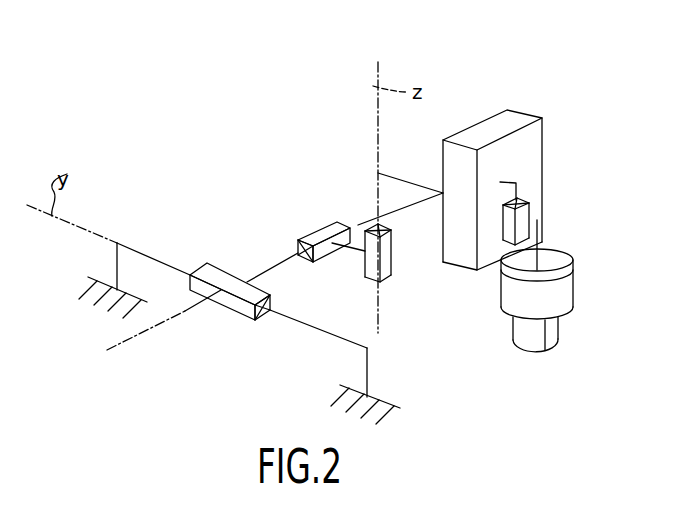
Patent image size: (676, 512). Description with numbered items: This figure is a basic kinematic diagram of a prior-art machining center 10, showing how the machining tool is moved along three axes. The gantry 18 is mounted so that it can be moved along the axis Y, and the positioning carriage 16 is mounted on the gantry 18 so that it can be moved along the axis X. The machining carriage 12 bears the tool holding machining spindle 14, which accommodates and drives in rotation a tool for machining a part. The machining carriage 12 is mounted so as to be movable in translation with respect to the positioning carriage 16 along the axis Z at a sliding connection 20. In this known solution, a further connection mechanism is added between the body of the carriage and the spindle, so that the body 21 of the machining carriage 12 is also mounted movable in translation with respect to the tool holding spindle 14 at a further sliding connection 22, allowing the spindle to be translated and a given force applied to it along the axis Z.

The machining center 10 is at (604, 404).
The machining carriage 12 is at (520, 155).
The machining spindle 14 is at (555, 292).
The positioning carriage 16 is at (316, 230).
The gantry 18 is at (230, 270).
The sliding connection 20 is at (383, 253).
The body of the machining carriage 21 is at (518, 148).
The further sliding connection 22 is at (522, 222).